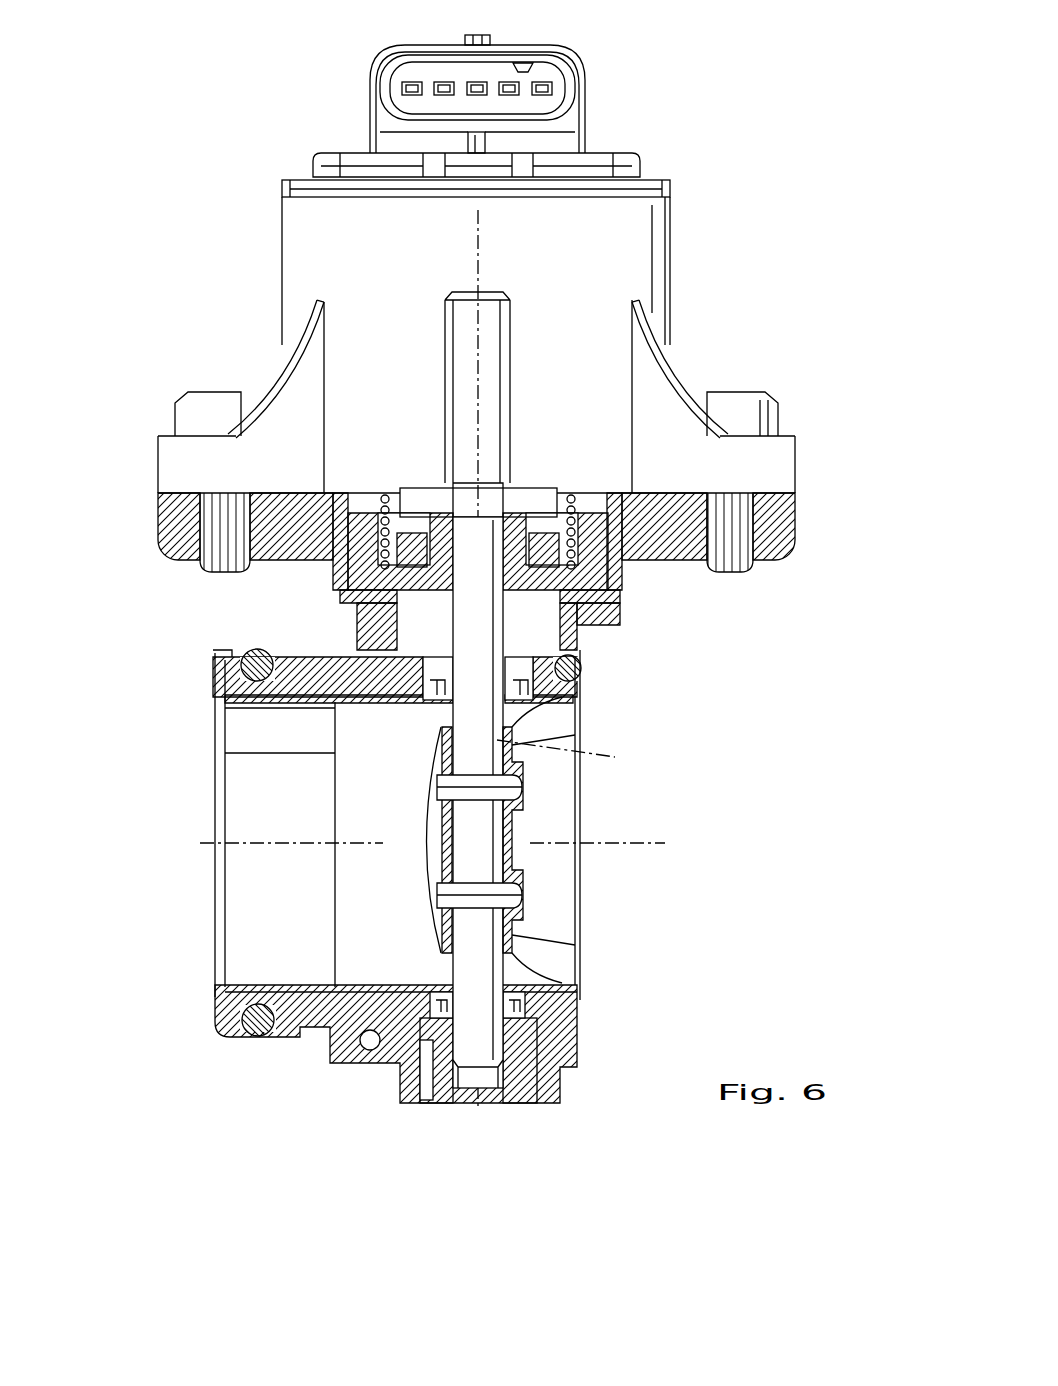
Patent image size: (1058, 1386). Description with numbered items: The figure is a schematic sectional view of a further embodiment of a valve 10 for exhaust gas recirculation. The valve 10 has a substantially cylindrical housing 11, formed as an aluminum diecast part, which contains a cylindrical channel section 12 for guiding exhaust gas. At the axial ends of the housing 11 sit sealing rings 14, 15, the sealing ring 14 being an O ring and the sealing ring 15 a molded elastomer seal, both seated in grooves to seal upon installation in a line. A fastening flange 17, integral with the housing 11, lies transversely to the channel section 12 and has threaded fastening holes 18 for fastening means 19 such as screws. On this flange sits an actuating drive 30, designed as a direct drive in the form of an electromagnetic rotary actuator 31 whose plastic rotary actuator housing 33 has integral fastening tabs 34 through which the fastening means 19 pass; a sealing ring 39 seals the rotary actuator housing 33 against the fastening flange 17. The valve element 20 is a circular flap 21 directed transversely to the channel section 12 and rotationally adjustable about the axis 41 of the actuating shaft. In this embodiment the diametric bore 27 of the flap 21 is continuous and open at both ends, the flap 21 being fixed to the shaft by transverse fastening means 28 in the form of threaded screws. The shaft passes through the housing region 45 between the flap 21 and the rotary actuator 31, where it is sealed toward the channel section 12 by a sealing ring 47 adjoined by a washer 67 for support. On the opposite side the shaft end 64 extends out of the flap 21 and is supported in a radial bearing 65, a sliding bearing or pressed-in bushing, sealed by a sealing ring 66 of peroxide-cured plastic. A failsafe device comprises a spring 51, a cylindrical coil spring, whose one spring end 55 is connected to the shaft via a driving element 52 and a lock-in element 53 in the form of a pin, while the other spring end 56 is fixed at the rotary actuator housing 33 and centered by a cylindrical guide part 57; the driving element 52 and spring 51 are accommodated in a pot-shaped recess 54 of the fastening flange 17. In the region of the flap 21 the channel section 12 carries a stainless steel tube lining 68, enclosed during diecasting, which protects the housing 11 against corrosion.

The valve 10 is at (713, 173).
The actuating drive 30 is at (292, 160).
The electromagnetic rotary actuator 31 is at (362, 254).
The rotary actuator housing 33 is at (657, 260).
The fastening tabs 34 is at (186, 462).
The fastening means 19 is at (186, 420).
The fastening holes 18 is at (211, 522).
The fastening flange 17 is at (790, 540).
The sealing ring 39 is at (657, 507).
The spring end 56 is at (385, 494).
The guide part 57 is at (543, 508).
The spring 51 is at (350, 560).
The driving element 52 is at (593, 543).
The lock-in element 53 is at (393, 597).
The recess 54 is at (620, 563).
The spring end 55 is at (590, 587).
The washer 67 is at (420, 653).
The housing region 45 is at (367, 697).
The sealing ring 47 is at (427, 700).
The tube lining 68 is at (440, 705).
The axis 41 is at (572, 755).
The fastening means 28 is at (510, 791).
The diametric bore 27 is at (495, 858).
The circular flap 21 is at (510, 940).
The sealing ring 66 is at (582, 1018).
The sealing ring 15 is at (517, 1053).
The shaft end 64 is at (487, 1049).
The sealing ring 14 is at (258, 1034).
The channel section 12 is at (337, 970).
The valve element 20 is at (438, 942).
The housing 11 is at (408, 1089).
The radial bearing 65 is at (447, 1085).